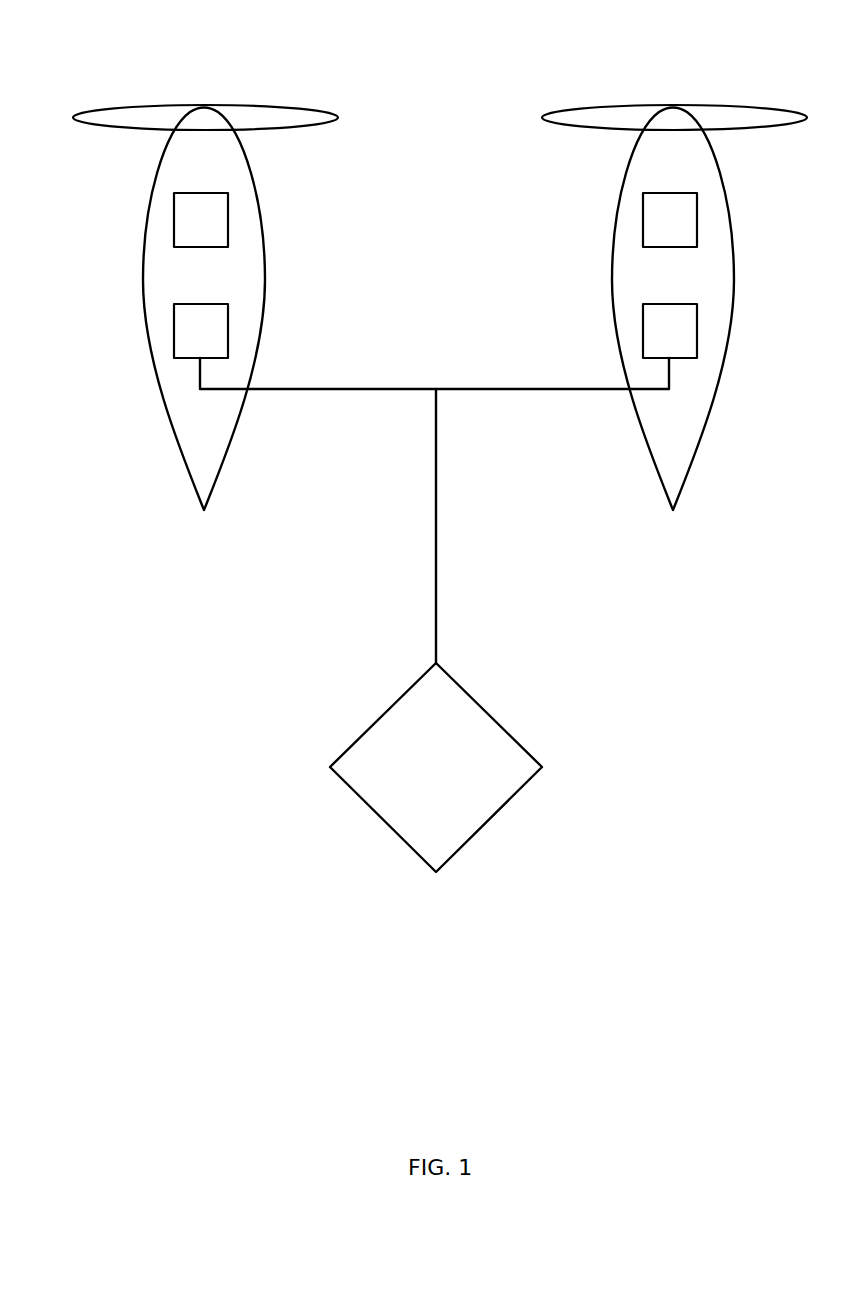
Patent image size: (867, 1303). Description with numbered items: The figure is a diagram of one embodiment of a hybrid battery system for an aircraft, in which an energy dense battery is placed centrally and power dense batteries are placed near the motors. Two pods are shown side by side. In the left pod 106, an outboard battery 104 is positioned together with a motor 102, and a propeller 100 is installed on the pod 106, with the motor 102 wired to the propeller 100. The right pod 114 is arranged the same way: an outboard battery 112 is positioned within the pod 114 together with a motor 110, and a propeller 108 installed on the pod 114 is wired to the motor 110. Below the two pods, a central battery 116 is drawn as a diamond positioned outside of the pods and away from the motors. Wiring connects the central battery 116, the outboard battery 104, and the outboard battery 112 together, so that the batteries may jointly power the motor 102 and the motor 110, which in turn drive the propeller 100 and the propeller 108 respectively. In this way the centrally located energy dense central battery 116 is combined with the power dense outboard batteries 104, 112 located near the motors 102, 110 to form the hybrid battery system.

The propeller 100 is at (113, 109).
The motor 102 is at (174, 223).
The outboard battery 104 is at (174, 333).
The pod 106 is at (188, 463).
The propeller 108 is at (660, 101).
The motor 110 is at (632, 217).
The outboard battery 112 is at (632, 330).
The pod 114 is at (659, 309).
The central battery 116 is at (363, 735).